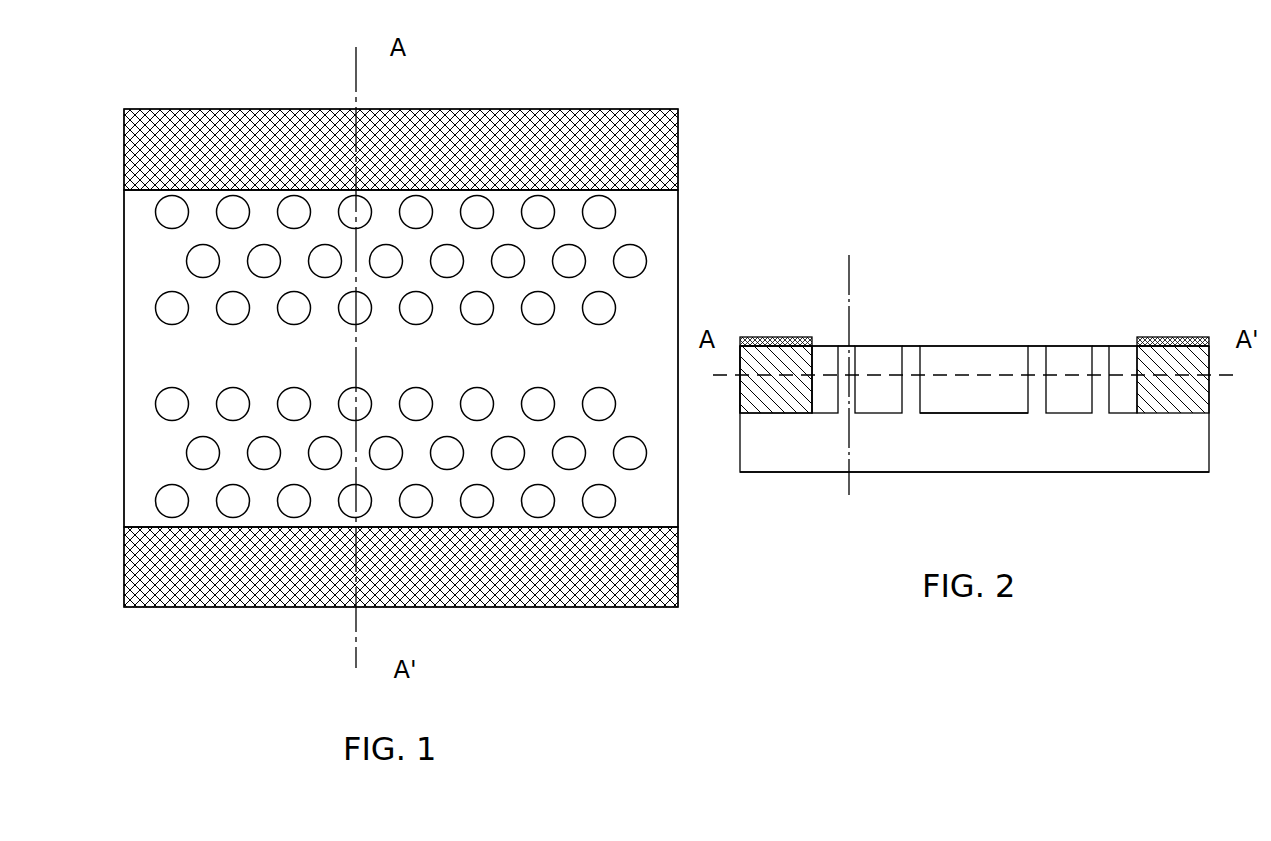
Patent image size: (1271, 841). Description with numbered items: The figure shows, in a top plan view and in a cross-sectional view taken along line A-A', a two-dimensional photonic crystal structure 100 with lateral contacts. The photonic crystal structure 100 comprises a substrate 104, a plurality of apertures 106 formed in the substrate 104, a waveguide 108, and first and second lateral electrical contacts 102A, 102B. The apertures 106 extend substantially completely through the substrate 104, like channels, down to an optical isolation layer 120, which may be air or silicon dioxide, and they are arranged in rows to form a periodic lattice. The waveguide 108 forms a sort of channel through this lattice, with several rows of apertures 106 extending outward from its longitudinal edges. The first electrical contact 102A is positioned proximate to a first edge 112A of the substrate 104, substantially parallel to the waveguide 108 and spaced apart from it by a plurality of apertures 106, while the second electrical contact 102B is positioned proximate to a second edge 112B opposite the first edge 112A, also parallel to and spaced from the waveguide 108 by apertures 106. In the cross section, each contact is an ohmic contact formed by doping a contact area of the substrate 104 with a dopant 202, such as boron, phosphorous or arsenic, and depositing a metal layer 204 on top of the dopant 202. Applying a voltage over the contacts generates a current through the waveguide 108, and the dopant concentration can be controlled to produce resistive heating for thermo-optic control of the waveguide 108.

In FIG. 1, the photonic crystal structure 100 is at (248, 70).
In FIG. 2, the photonic crystal structure 100 is at (873, 217).
In FIG. 1, the first lateral electrical contact 102A is at (138, 138).
In FIG. 2, the first lateral electrical contact 102A is at (795, 360).
In FIG. 1, the second lateral electrical contact 102B is at (137, 559).
In FIG. 2, the second lateral electrical contact 102B is at (1165, 360).
In FIG. 1, the substrate 104 is at (137, 410).
In FIG. 2, the substrate 104 is at (972, 368).
In FIG. 1, the apertures 106 is at (158, 212).
In FIG. 2, the apertures 106 is at (1102, 360).
In FIG. 1, the waveguide 108 is at (470, 370).
In FIG. 2, the waveguide 108 is at (997, 406).
In FIG. 1, the first edge 112A is at (667, 192).
In FIG. 1, the second edge 112B is at (653, 527).
In FIG. 2, the optical isolation layer 120 is at (1018, 445).
In FIG. 2, the dopant 202 is at (777, 400).
In FIG. 2, the metal layer 204 is at (778, 337).